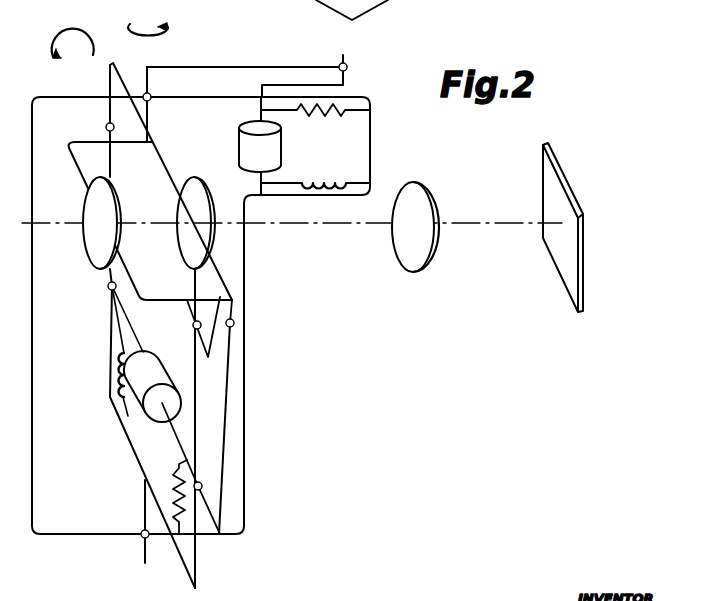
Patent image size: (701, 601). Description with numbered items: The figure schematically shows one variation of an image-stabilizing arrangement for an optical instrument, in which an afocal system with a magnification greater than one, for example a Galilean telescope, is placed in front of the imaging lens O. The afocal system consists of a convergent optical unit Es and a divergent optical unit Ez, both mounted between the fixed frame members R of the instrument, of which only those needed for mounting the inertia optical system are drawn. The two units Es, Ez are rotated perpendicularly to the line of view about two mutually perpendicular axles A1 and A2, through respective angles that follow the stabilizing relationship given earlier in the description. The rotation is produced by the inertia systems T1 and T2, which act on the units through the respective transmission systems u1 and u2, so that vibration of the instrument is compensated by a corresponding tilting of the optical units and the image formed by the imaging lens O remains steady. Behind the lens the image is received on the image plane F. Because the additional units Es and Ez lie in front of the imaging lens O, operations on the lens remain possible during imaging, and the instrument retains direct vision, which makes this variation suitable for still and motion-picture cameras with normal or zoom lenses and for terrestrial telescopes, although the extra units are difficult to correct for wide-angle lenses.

The frame members R is at (246, 425).
The inertia system T2 is at (273, 152).
The transmission system u2 is at (347, 66).
The axle A1 is at (108, 124).
The axle A2 is at (148, 321).
The convergent optical unit Es is at (100, 238).
The divergent optical unit Ez is at (186, 240).
The inertia system T1 is at (143, 378).
The transmission system u1 is at (234, 320).
The imaging lens O is at (406, 255).
The image plane / film F is at (553, 206).